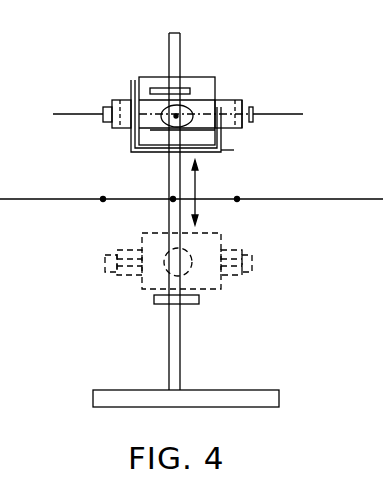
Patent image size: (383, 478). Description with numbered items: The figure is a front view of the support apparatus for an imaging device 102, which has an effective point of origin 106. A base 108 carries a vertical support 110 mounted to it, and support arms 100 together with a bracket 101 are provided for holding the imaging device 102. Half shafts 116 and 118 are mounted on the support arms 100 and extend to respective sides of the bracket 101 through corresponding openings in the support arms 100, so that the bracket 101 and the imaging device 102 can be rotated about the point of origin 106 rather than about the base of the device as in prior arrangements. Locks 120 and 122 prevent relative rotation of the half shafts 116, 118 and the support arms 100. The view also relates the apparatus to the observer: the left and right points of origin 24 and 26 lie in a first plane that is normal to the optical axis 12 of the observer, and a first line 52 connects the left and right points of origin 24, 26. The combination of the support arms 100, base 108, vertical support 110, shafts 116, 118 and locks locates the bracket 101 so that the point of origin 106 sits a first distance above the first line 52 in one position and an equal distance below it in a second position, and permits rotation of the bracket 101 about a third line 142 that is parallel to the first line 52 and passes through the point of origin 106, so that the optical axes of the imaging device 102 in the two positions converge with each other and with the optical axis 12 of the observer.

The optical axis of the observer 12 is at (171, 202).
The left point of origin 24 is at (239, 202).
The right point of origin 26 is at (101, 202).
The first line 52 is at (213, 192).
The support arms 100 is at (245, 127).
The bracket 101 is at (232, 149).
The imaging device 102 is at (215, 77).
The point of origin 106 is at (177, 116).
The base 108 is at (212, 389).
The vertical support 110 is at (182, 334).
The half shaft 116 is at (129, 100).
The half shaft 118 is at (223, 106).
The lock 120 is at (102, 108).
The lock 122 is at (252, 108).
The third line 142 is at (302, 114).